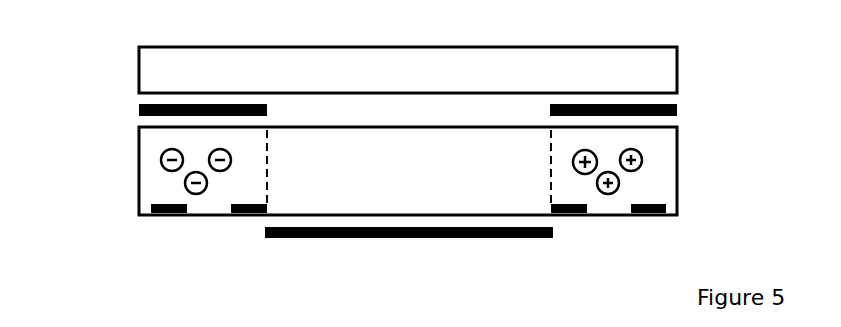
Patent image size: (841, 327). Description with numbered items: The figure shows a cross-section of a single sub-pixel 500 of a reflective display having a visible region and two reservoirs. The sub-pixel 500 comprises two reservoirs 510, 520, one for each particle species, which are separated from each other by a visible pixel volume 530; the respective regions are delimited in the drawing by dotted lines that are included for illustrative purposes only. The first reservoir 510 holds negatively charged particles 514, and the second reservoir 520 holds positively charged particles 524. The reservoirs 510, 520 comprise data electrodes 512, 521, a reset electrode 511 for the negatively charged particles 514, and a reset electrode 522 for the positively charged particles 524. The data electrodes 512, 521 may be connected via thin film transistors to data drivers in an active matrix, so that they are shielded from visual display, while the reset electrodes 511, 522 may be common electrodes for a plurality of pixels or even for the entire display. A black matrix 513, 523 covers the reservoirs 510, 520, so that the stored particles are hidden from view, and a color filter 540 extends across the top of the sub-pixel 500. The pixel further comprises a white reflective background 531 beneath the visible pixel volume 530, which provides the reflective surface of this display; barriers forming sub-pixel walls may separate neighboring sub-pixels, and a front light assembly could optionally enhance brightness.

The sub-pixel 500 is at (100, 183).
The reservoir 510 is at (150, 190).
The reset electrode 511 is at (168, 217).
The data electrode 512 is at (240, 218).
The black matrix 513 is at (167, 103).
The negatively charged particles 514 is at (165, 153).
The reservoir 520 is at (663, 133).
The data electrode 521 is at (588, 217).
The reset electrode 522 is at (658, 217).
The black matrix 523 is at (680, 104).
The positively charged particles 524 is at (643, 165).
The visible pixel volume 530 is at (516, 172).
The white reflective background 531 is at (433, 238).
The color filter 540 is at (665, 63).